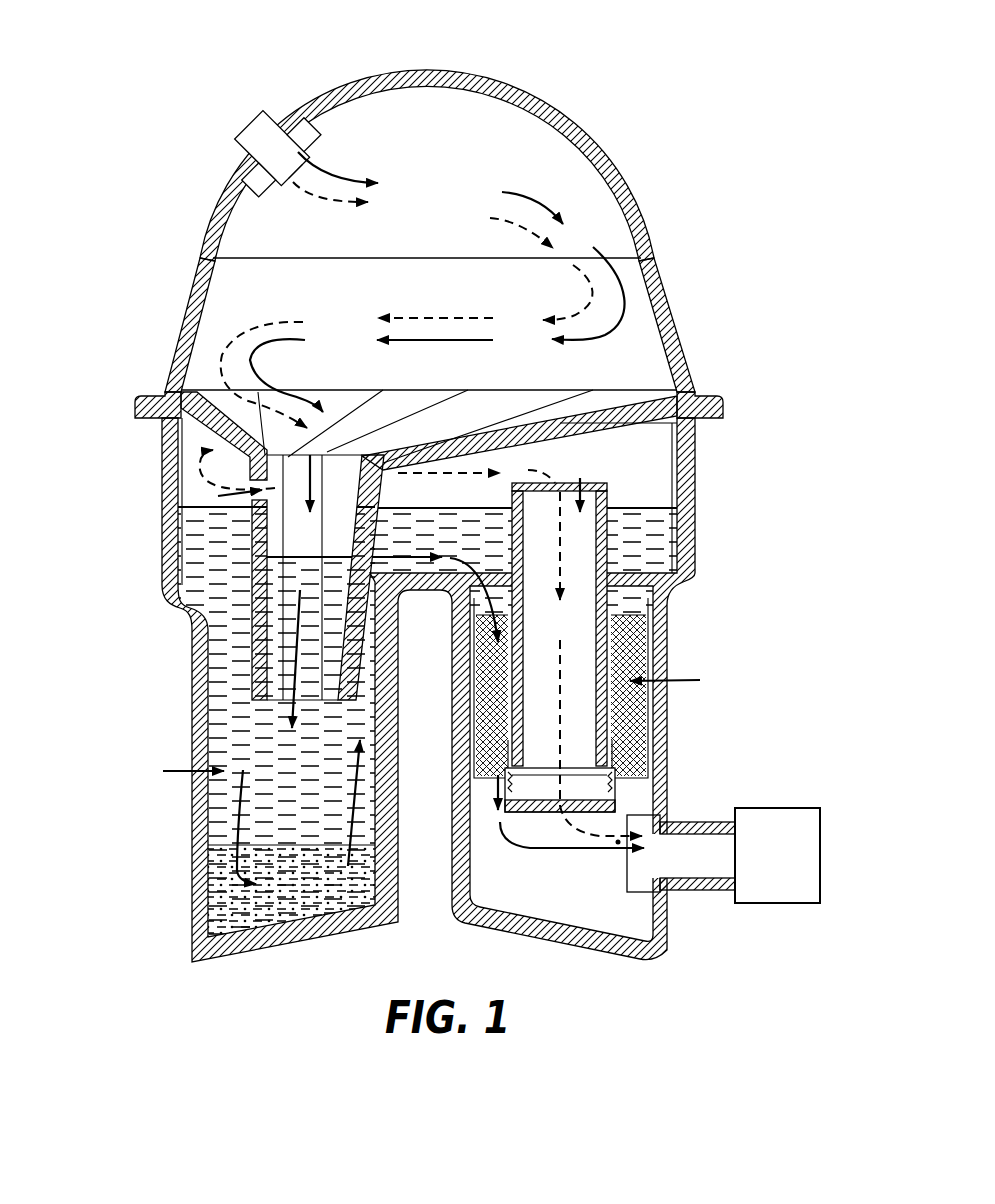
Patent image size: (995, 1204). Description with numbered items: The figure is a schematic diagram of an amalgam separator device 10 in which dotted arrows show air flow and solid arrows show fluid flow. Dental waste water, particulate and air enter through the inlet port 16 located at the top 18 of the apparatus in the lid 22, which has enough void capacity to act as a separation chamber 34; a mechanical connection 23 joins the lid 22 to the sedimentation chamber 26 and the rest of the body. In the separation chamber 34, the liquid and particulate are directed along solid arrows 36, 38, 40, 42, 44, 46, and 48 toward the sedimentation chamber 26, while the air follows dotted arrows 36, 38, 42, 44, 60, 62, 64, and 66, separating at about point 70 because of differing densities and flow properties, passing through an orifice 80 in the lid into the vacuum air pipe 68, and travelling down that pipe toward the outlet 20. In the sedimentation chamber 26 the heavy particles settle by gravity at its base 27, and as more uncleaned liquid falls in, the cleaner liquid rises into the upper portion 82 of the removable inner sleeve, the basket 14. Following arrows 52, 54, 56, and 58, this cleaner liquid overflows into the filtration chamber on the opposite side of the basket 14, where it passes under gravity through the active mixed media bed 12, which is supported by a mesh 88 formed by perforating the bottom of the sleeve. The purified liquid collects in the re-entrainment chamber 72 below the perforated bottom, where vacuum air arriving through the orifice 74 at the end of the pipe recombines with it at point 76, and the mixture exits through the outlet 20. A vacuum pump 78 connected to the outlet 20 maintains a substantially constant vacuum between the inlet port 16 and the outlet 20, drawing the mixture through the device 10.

The amalgam separator device 10 is at (436, 54).
The active mixed media bed 12 is at (640, 646).
The basket 14 is at (180, 470).
The inlet port 16 is at (288, 130).
The top 18 is at (373, 84).
The outlet 20 is at (656, 838).
The lid 22 is at (533, 100).
The mechanical connection 23 is at (146, 403).
The sedimentation chamber 26 is at (228, 740).
The base of the sedimentation zone 27 is at (243, 902).
The separation chamber 34 is at (552, 165).
The flow arrow 36 is at (330, 172).
The flow arrow 38 is at (538, 199).
The flow arrow 40 is at (575, 301).
The flow arrow 42 is at (442, 296).
The flow arrow 44 is at (260, 302).
The flow arrow 46 is at (313, 492).
The flow arrow 48 is at (300, 652).
The flow arrow 52 is at (236, 829).
The flow arrow 54 is at (370, 819).
The flow arrow 56 is at (458, 635).
The flow arrow 58 is at (454, 684).
The air flow arrow 60 is at (237, 470).
The air flow arrow 62 is at (433, 477).
The air flow arrow 64 is at (563, 564).
The air flow arrow 66 is at (563, 730).
The vacuum air pipe 68 is at (578, 580).
The divergence point 70 is at (276, 508).
The re-entrainment chamber 72 is at (557, 841).
The orifice 74 is at (592, 800).
The recombination point 76 is at (618, 842).
The vacuum pump 78 is at (758, 808).
The orifice 80 is at (226, 498).
The upper portion 82 is at (516, 562).
The mesh 88 is at (642, 570).